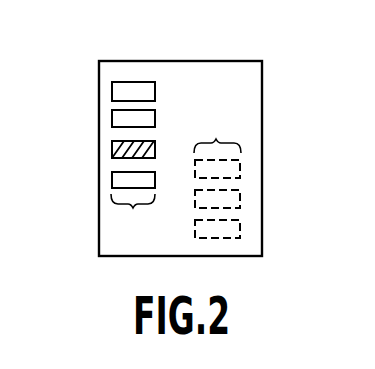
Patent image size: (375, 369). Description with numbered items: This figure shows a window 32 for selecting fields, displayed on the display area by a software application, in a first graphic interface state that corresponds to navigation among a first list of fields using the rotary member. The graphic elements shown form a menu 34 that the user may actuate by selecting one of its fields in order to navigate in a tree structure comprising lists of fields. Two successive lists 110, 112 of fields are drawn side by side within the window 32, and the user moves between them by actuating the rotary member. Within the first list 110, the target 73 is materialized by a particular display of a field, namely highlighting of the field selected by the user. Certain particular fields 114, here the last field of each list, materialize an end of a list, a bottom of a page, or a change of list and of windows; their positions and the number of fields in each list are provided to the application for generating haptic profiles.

The window 32 is at (98, 96).
The menu 34 is at (170, 99).
The target 73 is at (112, 150).
The first list of fields 110 is at (133, 161).
The second list of fields 112 is at (217, 158).
The particular field 114 is at (112, 180).